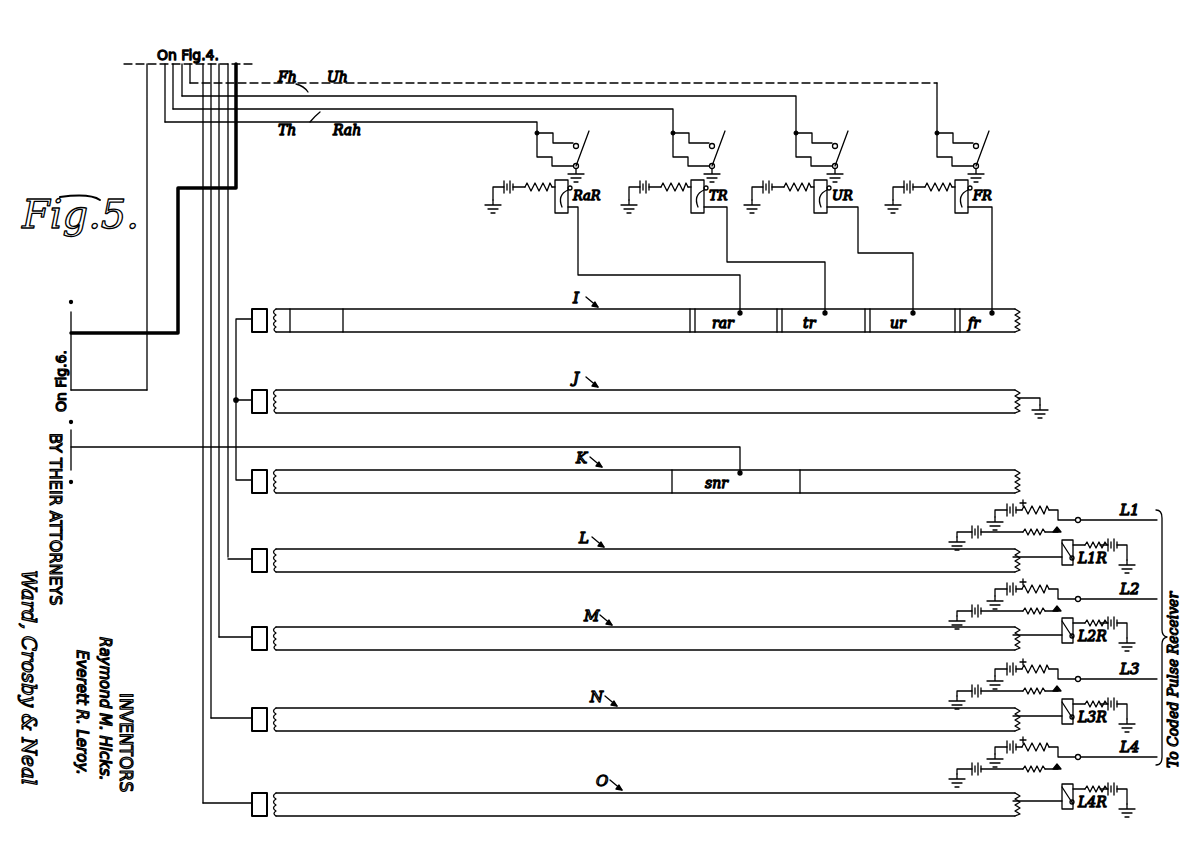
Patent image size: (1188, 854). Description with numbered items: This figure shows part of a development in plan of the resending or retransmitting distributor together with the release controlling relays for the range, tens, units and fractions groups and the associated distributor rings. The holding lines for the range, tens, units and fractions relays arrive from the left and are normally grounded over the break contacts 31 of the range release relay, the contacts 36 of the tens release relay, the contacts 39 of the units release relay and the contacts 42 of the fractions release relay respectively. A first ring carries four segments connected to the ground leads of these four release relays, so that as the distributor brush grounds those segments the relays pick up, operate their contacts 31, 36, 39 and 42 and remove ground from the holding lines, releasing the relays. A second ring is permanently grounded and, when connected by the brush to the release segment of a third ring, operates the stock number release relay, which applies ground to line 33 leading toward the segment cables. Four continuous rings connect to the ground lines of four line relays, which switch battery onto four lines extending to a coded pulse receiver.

The break contacts of range release relay RaR 31 is at (565, 142).
The contacts of relay TR 36 is at (701, 142).
The contacts of relay UR 39 is at (824, 142).
The contacts of relay FR 42 is at (965, 142).
The line 33 is at (103, 389).